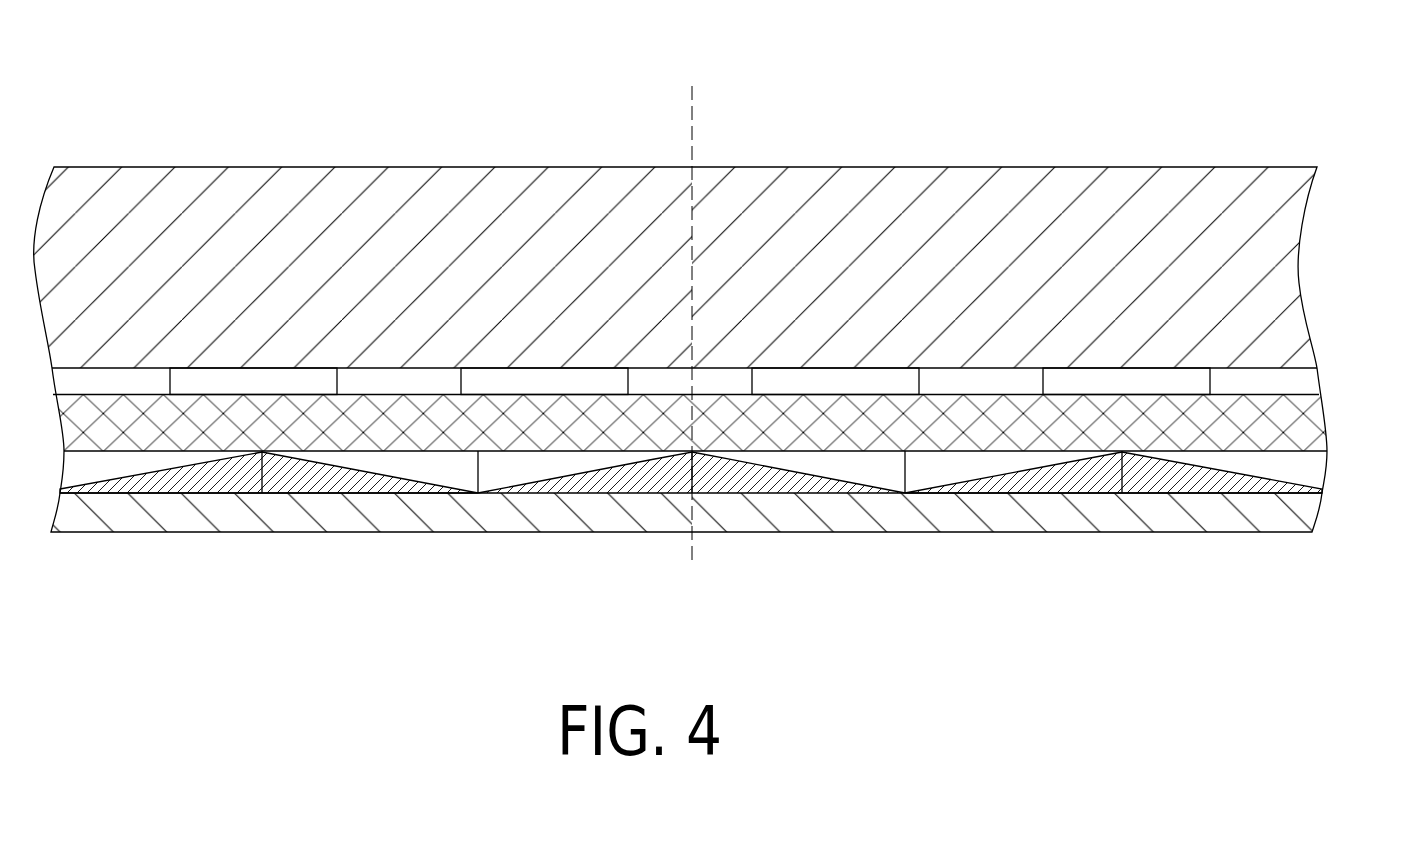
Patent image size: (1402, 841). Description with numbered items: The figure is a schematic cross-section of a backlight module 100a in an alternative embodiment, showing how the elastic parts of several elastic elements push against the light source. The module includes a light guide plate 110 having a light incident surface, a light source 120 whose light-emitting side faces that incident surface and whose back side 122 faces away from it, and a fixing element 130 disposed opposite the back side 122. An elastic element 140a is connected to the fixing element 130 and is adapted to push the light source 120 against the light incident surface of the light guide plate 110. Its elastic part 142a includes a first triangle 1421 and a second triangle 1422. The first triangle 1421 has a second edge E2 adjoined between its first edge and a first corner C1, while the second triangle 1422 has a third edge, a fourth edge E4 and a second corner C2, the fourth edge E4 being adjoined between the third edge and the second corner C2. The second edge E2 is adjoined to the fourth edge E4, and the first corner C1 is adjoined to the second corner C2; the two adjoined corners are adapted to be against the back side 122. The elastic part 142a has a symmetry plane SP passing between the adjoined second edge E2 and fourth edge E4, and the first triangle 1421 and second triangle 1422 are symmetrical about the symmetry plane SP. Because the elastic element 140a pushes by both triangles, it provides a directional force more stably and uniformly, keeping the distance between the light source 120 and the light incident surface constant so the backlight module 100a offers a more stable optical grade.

The backlight module 100a is at (80, 77).
The light guide plate 110 is at (1273, 278).
The light source 120 is at (680, 476).
The back side 122 is at (973, 451).
The fixing element 130 is at (1263, 517).
The elastic element 140a is at (691, 389).
The elastic part 142a is at (691, 389).
The first triangle 1421 is at (585, 362).
The second triangle 1422 is at (798, 362).
The second edge E2 is at (640, 457).
The fourth edge E4 is at (743, 455).
The first corner C1 is at (689, 453).
The second corner C2 is at (698, 453).
The symmetry plane SP is at (693, 86).